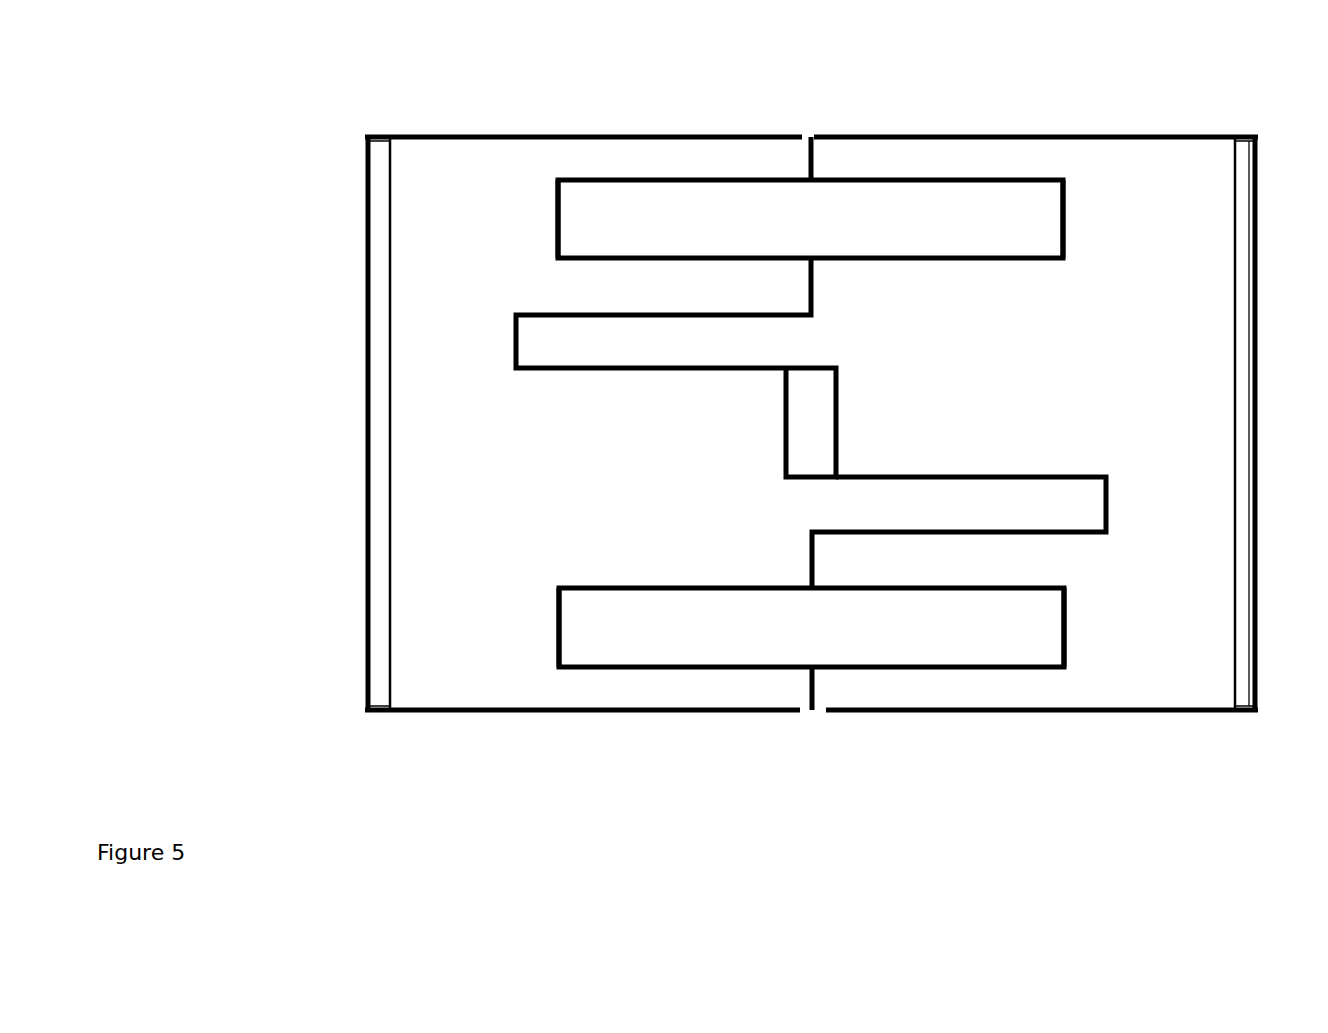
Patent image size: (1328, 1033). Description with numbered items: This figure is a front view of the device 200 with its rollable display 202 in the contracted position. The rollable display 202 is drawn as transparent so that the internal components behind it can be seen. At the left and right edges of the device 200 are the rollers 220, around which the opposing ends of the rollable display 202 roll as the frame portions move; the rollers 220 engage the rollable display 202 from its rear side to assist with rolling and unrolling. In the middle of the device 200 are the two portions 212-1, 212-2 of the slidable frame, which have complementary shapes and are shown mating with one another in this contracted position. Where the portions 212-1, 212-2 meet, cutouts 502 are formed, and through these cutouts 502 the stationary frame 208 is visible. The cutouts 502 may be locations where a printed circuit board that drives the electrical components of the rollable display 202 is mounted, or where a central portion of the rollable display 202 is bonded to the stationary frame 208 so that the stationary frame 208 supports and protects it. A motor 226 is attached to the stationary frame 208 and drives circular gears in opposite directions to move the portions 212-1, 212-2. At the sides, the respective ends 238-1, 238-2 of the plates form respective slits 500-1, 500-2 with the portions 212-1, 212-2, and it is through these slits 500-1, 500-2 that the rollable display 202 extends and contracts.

The device 200 is at (1220, 50).
The rollable display 202 is at (491, 152).
The rollers 220 is at (377, 158).
The end of plate 238-1 is at (370, 287).
The end of plate 238-2 is at (1253, 256).
The slit 500-1 is at (382, 314).
The slit 500-2 is at (1242, 319).
The stationary frame 208 is at (830, 226).
The cutouts 502 is at (1066, 209).
The portion of slidable frame 212-1 is at (638, 481).
The portion of slidable frame 212-2 is at (1098, 394).
The motor 226 is at (828, 418).